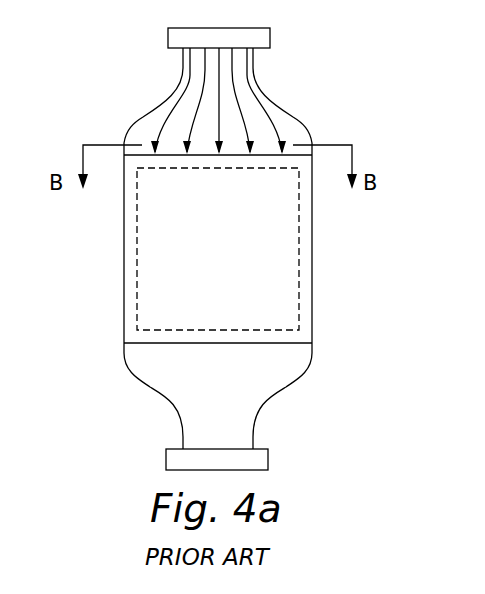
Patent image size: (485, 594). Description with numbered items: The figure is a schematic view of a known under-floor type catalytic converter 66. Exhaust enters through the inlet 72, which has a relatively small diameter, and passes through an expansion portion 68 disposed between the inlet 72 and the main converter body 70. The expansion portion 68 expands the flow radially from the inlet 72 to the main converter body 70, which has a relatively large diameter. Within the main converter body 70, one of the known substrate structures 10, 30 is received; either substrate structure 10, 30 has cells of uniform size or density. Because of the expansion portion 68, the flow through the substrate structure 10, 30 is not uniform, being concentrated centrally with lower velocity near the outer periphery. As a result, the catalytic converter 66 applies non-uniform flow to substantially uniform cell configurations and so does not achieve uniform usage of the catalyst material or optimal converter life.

The substrate structure 10 is at (282, 249).
The substrate structure 30 is at (220, 263).
The catalytic converter 66 is at (238, 238).
The expansion portion 68 is at (232, 105).
The main converter body 70 is at (123, 298).
The inlet 72 is at (192, 28).